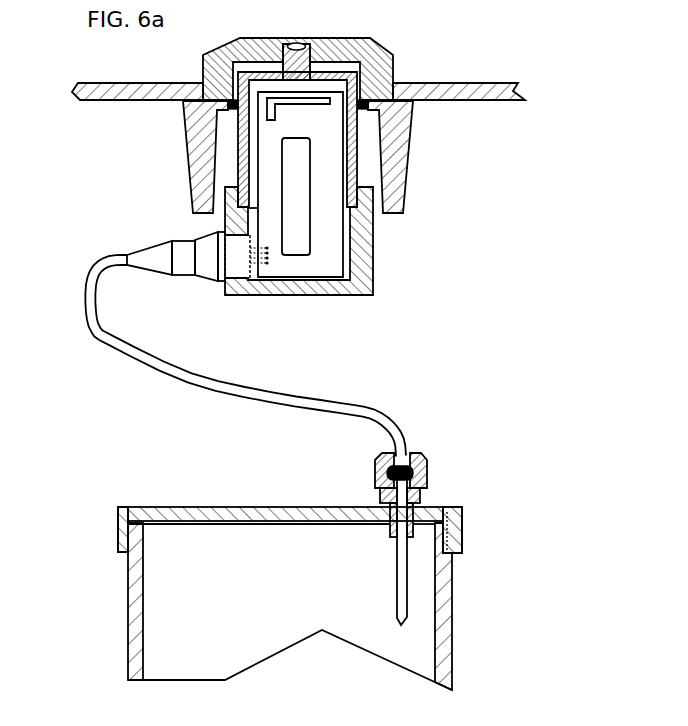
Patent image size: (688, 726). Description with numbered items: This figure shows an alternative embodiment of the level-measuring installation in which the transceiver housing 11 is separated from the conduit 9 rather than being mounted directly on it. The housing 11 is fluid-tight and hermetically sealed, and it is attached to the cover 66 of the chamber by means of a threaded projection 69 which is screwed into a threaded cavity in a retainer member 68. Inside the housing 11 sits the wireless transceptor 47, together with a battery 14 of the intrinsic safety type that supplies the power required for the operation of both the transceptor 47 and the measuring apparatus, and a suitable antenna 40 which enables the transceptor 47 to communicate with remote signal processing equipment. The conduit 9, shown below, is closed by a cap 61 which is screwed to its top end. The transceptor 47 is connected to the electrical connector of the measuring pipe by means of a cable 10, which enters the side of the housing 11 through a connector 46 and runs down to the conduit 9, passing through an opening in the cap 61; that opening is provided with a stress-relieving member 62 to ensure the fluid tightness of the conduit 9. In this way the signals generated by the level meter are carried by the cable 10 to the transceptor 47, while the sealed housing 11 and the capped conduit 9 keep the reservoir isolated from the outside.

The conduit 9 is at (447, 627).
The cable 10 is at (197, 380).
The transceiver housing 11 is at (378, 242).
The battery 14 is at (296, 243).
The antenna 40 is at (267, 113).
The connector 46 is at (215, 273).
The wireless transceptor 47 is at (327, 232).
The cap 61 is at (225, 507).
The stress-relieving member 62 is at (427, 462).
The cover 66 is at (438, 92).
The retainer member 68 is at (378, 56).
The threaded projection 69 is at (292, 47).